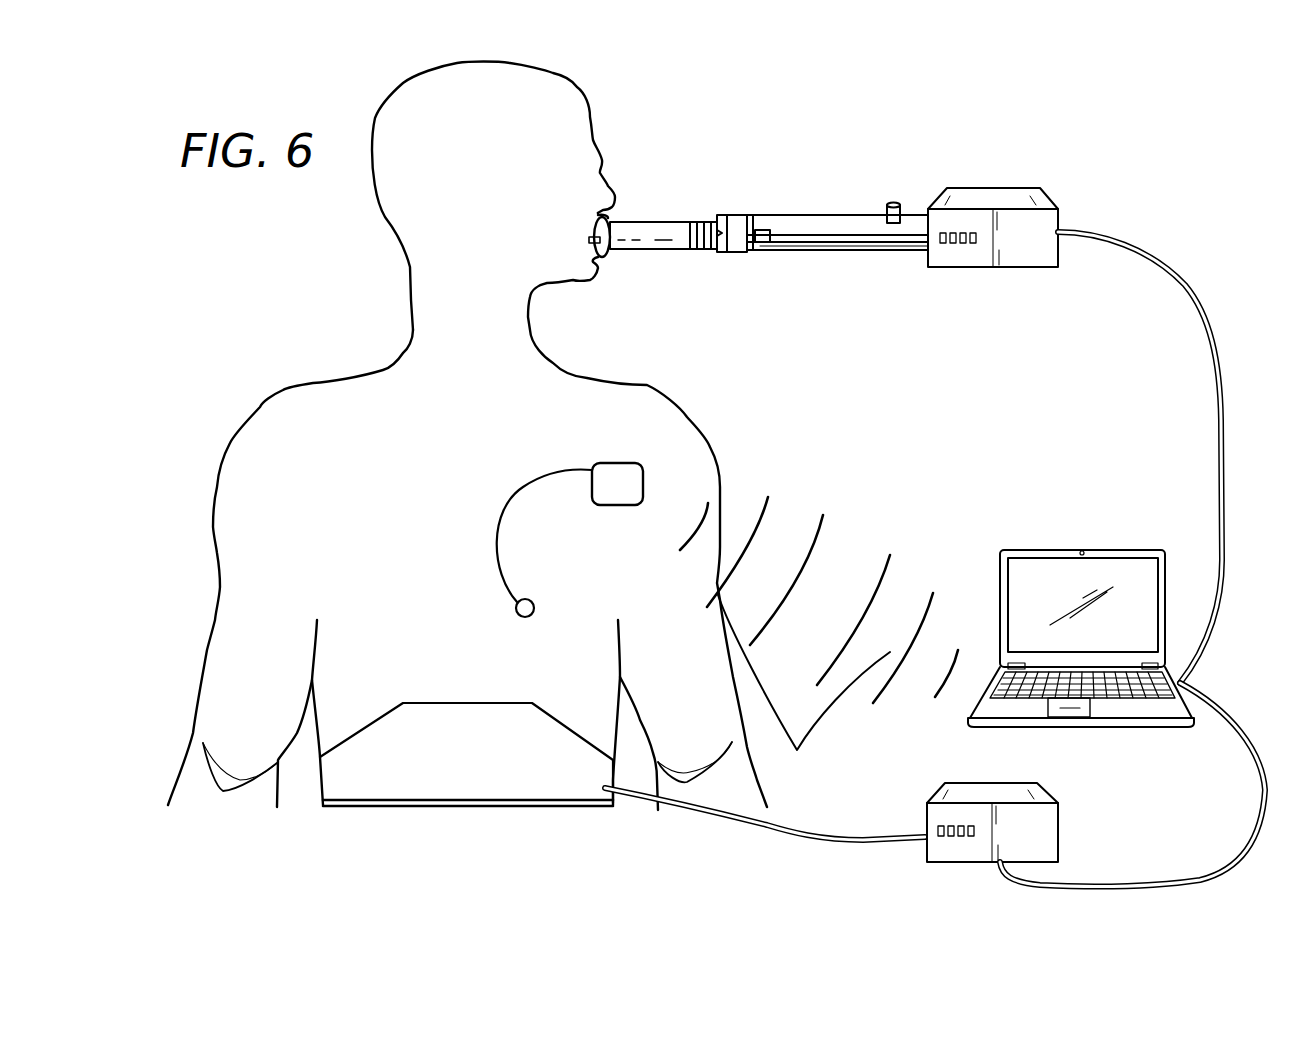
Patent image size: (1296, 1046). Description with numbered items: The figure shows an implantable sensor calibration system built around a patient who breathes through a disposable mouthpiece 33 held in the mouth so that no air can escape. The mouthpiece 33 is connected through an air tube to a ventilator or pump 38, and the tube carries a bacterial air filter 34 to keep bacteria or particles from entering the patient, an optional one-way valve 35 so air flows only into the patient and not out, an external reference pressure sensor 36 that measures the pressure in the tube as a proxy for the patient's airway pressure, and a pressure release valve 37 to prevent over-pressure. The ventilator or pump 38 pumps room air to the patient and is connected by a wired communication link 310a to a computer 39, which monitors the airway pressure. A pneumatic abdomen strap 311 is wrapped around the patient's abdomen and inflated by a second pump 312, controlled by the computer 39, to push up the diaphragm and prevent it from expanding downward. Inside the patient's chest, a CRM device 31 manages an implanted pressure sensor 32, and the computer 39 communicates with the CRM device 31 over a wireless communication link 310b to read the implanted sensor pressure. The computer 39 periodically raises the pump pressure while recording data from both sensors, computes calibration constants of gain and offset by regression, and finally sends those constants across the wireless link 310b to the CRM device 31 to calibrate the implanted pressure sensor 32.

The CRM device 31 is at (643, 470).
The implanted pressure sensor 32 is at (513, 604).
The disposable mouthpiece 33 is at (665, 222).
The bacterial air filter 34 is at (693, 222).
The one-way valve 35 is at (753, 215).
The external reference pressure sensor 36 is at (767, 230).
The pressure release valve 37 is at (891, 225).
The ventilator or pump 38 is at (1010, 268).
The computer 39 is at (1117, 550).
The wired communication link 310a is at (1197, 307).
The wireless communication link 310b is at (804, 687).
The pneumatic abdomen strap 311 is at (363, 792).
The second pump 312 is at (1060, 827).